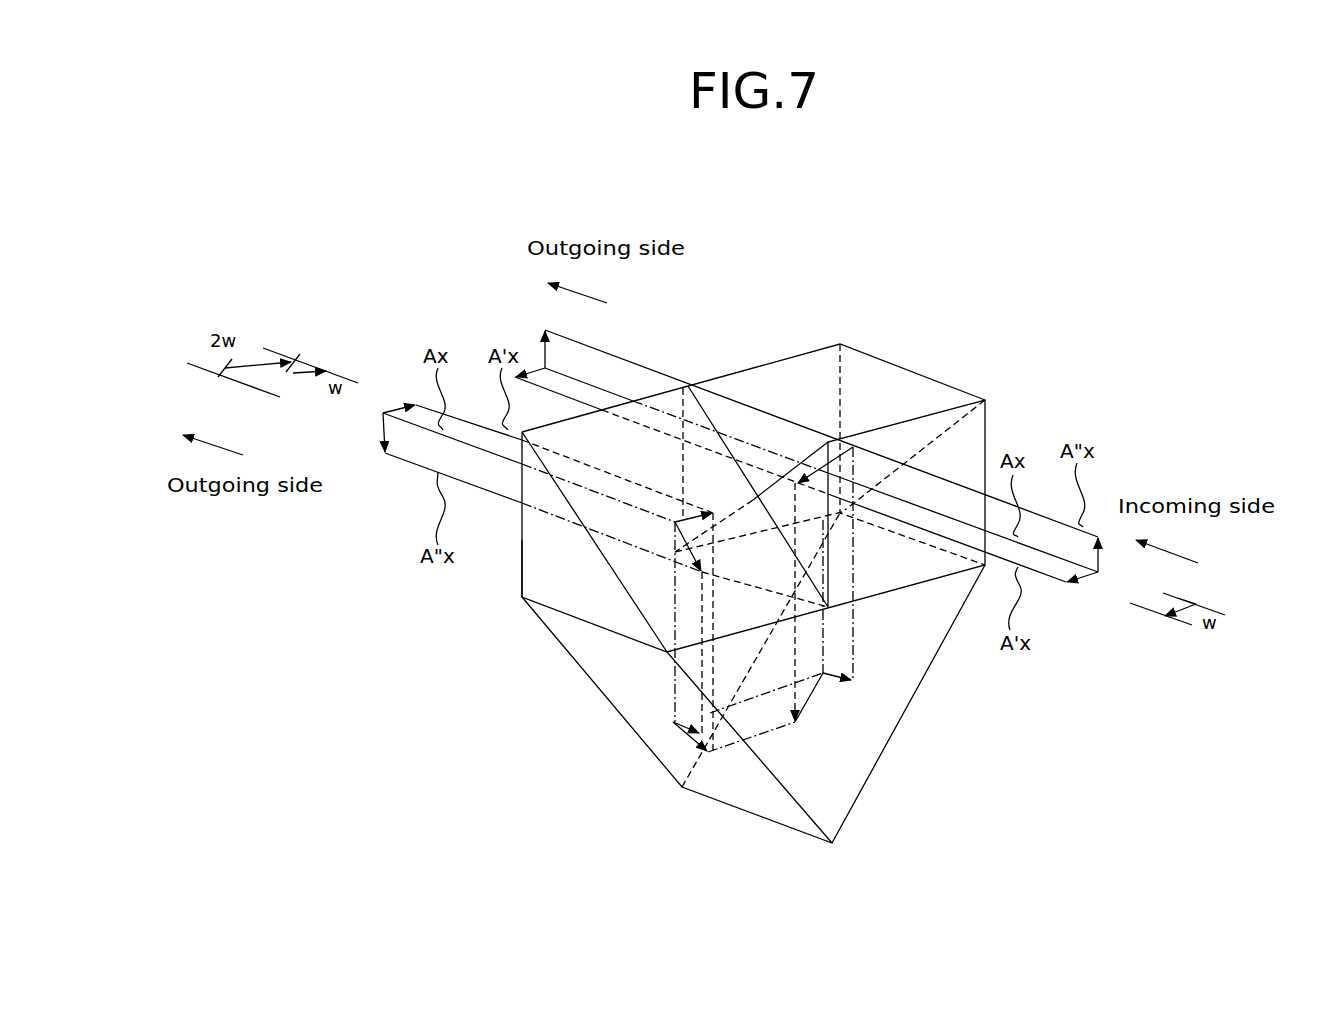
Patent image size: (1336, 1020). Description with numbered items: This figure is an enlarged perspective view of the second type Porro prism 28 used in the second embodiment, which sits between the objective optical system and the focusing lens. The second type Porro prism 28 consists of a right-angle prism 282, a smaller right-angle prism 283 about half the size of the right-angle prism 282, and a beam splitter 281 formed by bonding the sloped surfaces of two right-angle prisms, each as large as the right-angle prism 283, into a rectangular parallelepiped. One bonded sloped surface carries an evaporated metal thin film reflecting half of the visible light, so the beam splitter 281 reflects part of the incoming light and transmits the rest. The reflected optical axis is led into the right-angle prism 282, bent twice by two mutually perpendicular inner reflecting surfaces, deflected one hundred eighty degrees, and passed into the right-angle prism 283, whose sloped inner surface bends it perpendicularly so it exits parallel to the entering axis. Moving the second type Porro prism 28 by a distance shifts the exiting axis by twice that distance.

The second type Porro prism 28 is at (1057, 227).
The beam splitter 281 is at (967, 392).
The right-angle prism 282 is at (917, 682).
The right-angle prism 283 is at (519, 574).